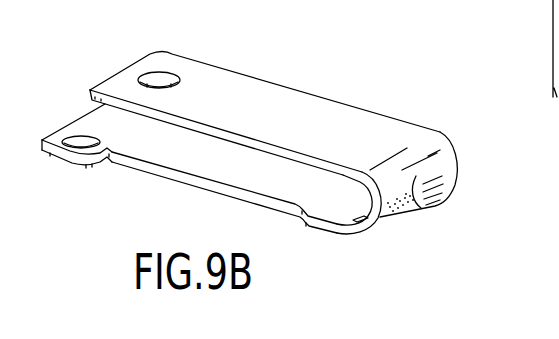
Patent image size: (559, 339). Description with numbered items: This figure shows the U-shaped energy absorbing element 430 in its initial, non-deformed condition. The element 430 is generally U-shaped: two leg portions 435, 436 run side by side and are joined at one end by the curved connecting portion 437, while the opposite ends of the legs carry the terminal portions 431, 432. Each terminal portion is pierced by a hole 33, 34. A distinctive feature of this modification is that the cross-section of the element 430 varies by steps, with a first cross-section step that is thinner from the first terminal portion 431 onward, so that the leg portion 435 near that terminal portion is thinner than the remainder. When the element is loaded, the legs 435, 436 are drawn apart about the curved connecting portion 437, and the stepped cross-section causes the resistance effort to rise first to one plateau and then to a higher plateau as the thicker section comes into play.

The U-shaped element 430 is at (278, 125).
The lower arm 431 is at (173, 149).
The upper arm 432 is at (257, 94).
The mounting hole of lower arm 33 is at (80, 141).
The mounting hole of upper arm 34 is at (167, 72).
The narrowed middle section of lower arm 435 is at (238, 167).
The top surface of upper arm 436 is at (258, 106).
The bent connecting portion 437 is at (423, 207).